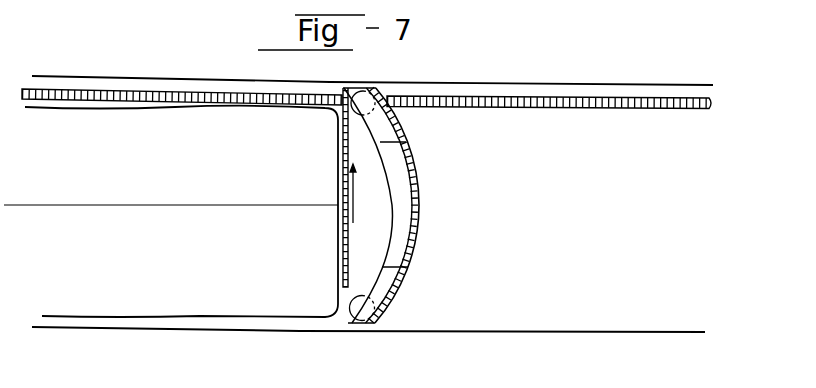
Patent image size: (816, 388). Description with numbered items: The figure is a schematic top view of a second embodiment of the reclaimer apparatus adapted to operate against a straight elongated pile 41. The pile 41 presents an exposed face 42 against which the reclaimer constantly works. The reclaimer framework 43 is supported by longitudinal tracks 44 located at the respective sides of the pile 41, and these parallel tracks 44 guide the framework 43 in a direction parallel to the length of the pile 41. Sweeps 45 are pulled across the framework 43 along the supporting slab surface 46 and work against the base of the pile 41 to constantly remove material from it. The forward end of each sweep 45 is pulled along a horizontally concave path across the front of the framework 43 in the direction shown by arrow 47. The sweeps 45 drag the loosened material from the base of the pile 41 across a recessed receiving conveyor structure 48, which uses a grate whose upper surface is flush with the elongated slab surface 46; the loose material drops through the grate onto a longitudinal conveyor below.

The pile 41 is at (223, 269).
The exposed face 42 is at (341, 168).
The reclaimer framework 43 is at (392, 211).
The longitudinal tracks 44 is at (513, 84).
The sweeps 45 is at (349, 254).
The slab surface 46 is at (505, 225).
The arrow 47 is at (356, 173).
The recessed receiving conveyor structure 48 is at (602, 107).